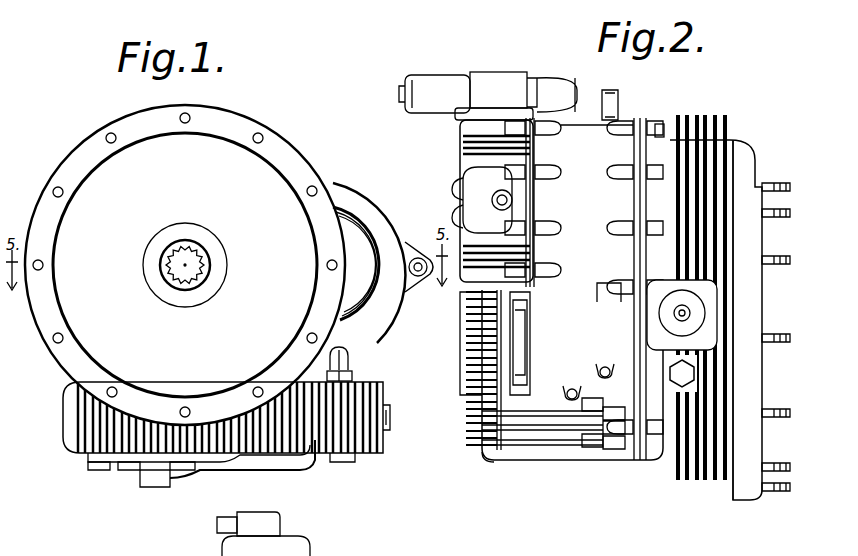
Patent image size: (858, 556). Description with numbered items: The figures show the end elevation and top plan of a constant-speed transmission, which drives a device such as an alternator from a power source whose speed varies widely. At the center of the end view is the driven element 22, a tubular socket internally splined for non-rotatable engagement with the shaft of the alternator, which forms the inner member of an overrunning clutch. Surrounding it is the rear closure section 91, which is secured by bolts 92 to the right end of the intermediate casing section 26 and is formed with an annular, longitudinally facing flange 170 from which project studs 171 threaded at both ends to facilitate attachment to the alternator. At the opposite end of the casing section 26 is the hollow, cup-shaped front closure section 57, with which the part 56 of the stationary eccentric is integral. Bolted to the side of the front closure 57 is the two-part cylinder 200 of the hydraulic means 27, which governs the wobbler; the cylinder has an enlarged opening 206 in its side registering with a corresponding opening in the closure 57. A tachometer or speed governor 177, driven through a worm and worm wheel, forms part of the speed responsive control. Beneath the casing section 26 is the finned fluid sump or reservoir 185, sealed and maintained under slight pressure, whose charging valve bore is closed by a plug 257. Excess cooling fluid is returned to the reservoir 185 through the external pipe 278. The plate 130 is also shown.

In FIG. 1, the driven element 22 is at (166, 263).
In FIG. 2, the intermediate casing section 26 is at (588, 208).
In FIG. 2, the hydraulic means 27 is at (515, 72).
In FIG. 2, the part of two-part eccentric member 56 is at (494, 207).
In FIG. 2, the front closure section 57 is at (472, 190).
In FIG. 1, the rear closure section 91 is at (222, 343).
In FIG. 2, the rear closure section 91 is at (742, 152).
In FIG. 2, the bolts 92 is at (660, 124).
In FIG. 2, the mounting plate 130 is at (497, 396).
In FIG. 1, the annular flange 170 is at (226, 122).
In FIG. 1, the studs 171 is at (313, 186).
In FIG. 2, the studs 171 is at (782, 432).
In FIG. 2, the tachometer or speed governor 177 is at (713, 321).
In FIG. 1, the fluid sump or reservoir 185 is at (383, 460).
In FIG. 2, the fluid sump or reservoir 185 is at (497, 462).
In FIG. 2, the two-part cylinder 200 is at (475, 73).
In FIG. 1, the enlarged opening 206 is at (351, 376).
In FIG. 2, the plug 257 is at (696, 373).
In FIG. 1, the external pipe 278 is at (347, 357).